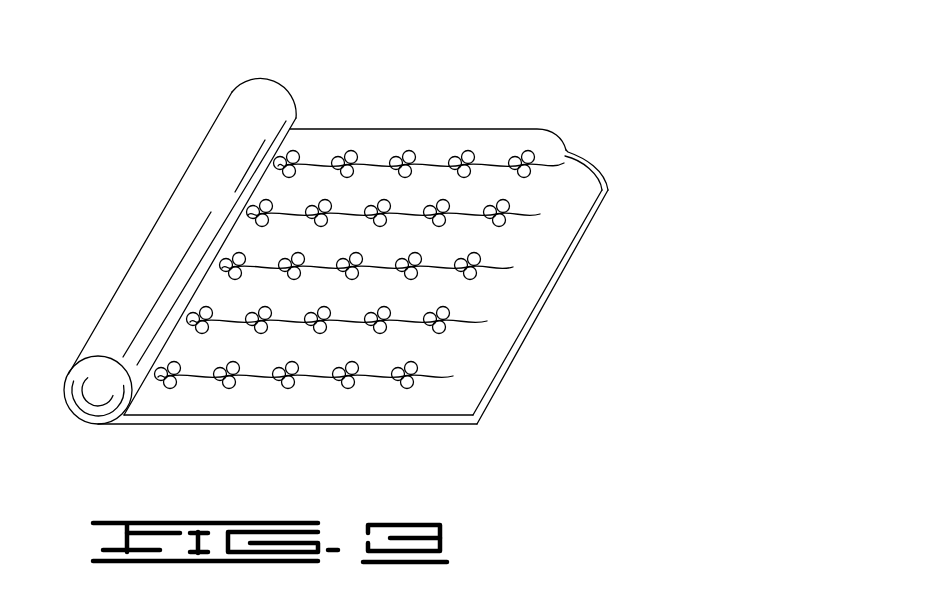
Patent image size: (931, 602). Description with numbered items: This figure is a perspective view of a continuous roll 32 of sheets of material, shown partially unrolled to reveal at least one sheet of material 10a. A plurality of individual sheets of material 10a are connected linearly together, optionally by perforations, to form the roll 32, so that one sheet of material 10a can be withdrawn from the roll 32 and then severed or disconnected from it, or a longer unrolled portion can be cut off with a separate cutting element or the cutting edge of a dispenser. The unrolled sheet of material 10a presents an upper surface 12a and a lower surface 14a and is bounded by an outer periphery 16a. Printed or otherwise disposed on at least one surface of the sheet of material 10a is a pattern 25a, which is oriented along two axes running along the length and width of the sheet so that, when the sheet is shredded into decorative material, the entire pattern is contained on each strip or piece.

The sheet of material 10a is at (500, 115).
The upper surface 12a is at (287, 403).
The lower surface 14a is at (568, 150).
The outer periphery 16a is at (503, 378).
The pattern 25a is at (348, 156).
The roll 32 is at (162, 142).